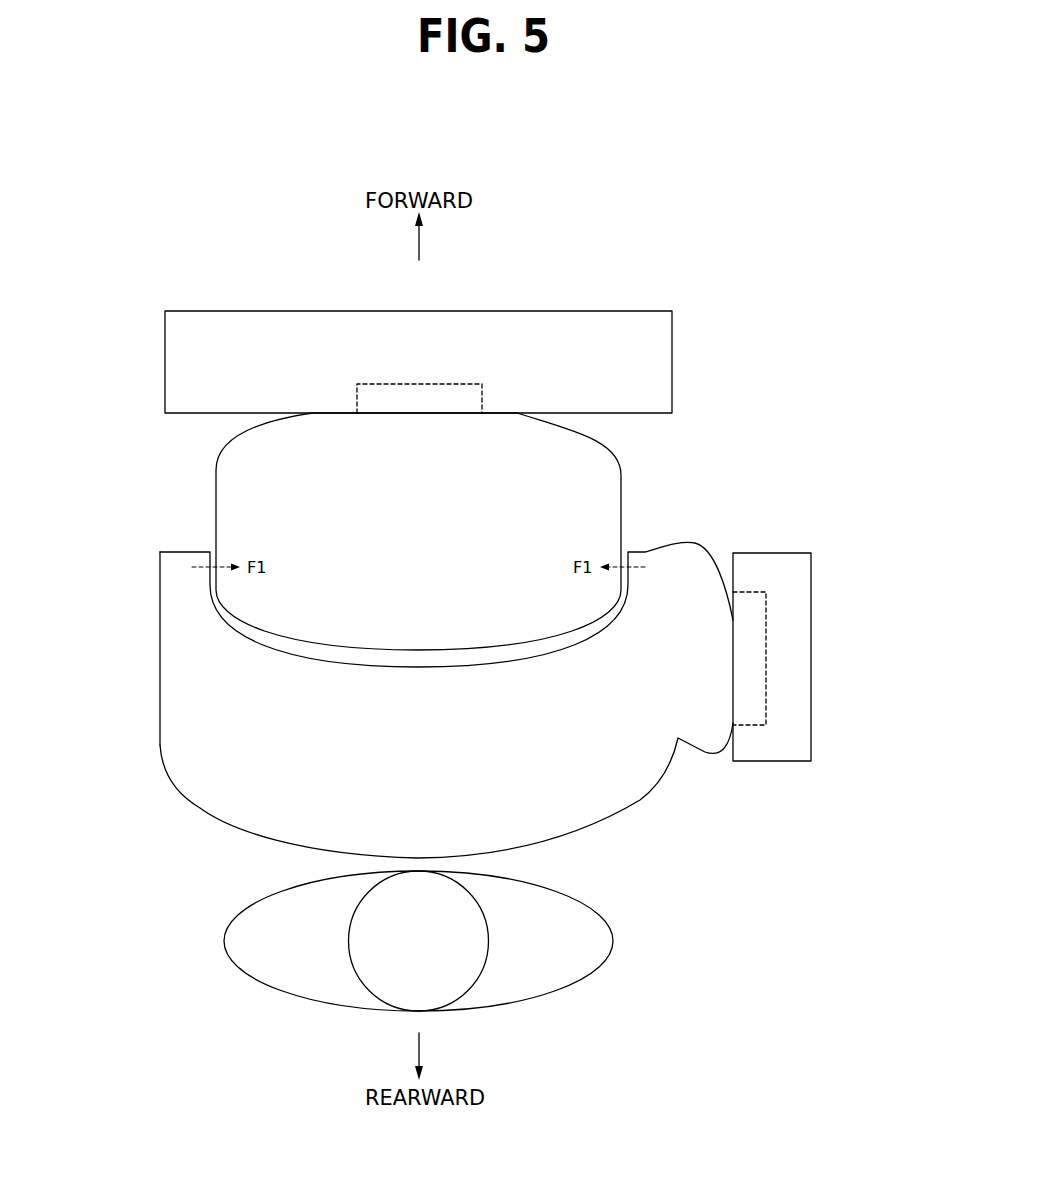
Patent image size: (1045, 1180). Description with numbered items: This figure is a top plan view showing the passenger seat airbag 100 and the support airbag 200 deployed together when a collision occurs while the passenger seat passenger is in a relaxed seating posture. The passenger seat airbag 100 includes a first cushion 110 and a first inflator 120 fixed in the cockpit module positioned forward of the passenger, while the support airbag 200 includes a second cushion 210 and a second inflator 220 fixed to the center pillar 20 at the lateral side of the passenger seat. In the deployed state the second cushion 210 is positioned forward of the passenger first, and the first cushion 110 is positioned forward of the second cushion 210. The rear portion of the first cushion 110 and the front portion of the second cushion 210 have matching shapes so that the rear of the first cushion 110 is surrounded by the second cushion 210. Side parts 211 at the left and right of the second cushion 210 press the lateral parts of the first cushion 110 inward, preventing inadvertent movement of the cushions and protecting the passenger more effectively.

The center pillar 20 is at (821, 630).
The second inflator 220 is at (750, 657).
The passenger seat airbag 100 is at (364, 446).
The first cushion 110 is at (255, 490).
The first inflator 120 is at (466, 384).
The support airbag 200 is at (399, 680).
The second cushion 210 is at (397, 773).
The side parts 211 is at (175, 578).